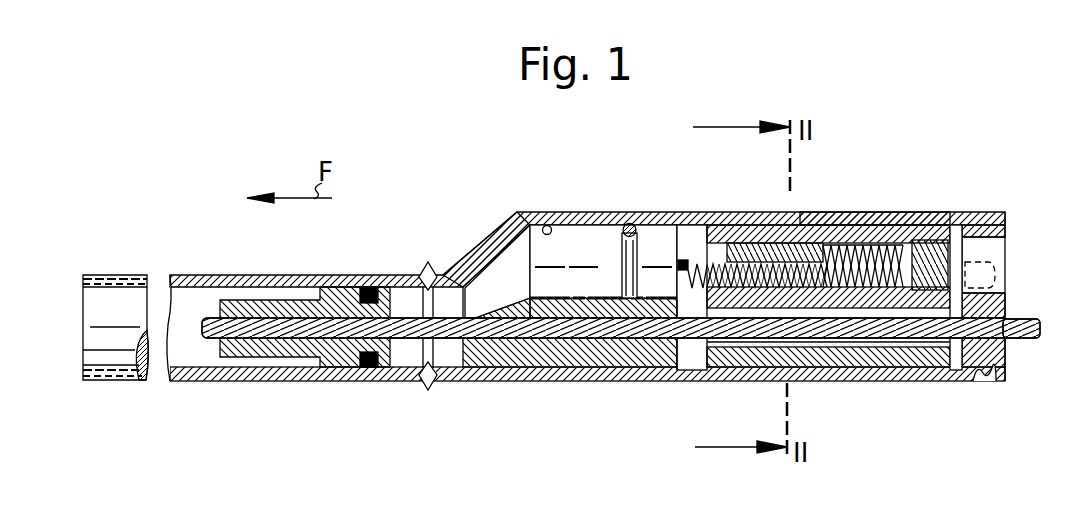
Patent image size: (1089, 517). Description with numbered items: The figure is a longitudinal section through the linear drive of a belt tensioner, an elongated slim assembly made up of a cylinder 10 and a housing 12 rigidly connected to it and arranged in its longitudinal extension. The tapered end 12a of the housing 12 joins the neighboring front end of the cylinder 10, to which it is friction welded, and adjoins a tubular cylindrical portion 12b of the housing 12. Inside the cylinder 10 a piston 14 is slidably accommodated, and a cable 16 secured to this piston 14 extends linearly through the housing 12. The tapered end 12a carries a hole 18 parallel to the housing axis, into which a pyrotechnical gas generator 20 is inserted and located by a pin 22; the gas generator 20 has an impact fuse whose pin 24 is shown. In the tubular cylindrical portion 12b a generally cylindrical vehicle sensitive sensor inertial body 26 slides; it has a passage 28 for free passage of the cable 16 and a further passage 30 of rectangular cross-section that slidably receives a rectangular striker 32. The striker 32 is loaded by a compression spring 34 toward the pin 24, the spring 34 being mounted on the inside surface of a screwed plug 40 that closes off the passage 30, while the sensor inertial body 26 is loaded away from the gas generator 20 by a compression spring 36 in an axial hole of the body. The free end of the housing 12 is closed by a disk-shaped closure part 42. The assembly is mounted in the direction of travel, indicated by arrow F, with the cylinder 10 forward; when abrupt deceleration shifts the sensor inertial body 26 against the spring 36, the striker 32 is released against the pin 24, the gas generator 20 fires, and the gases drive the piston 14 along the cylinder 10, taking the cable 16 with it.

The cylinder 10 is at (187, 278).
The housing 12 is at (591, 207).
The tapered end 12a is at (481, 262).
The tubular cylindrical portion 12b is at (852, 222).
The piston 14 is at (343, 358).
The cable 16 is at (500, 325).
The hole 18 is at (548, 226).
The pyrotechnical gas generator 20 is at (569, 276).
The pin 22 is at (629, 223).
The pin of the impact fuse 24 is at (688, 225).
The sensor inertial body 26 is at (920, 350).
The passage 28 is at (850, 343).
The further passage 30 is at (732, 260).
The striker 32 is at (800, 243).
The compression spring 34 is at (900, 245).
The compression spring 36 is at (690, 262).
The screwed plug 40 is at (946, 242).
The disk-shaped closure part 42 is at (997, 313).